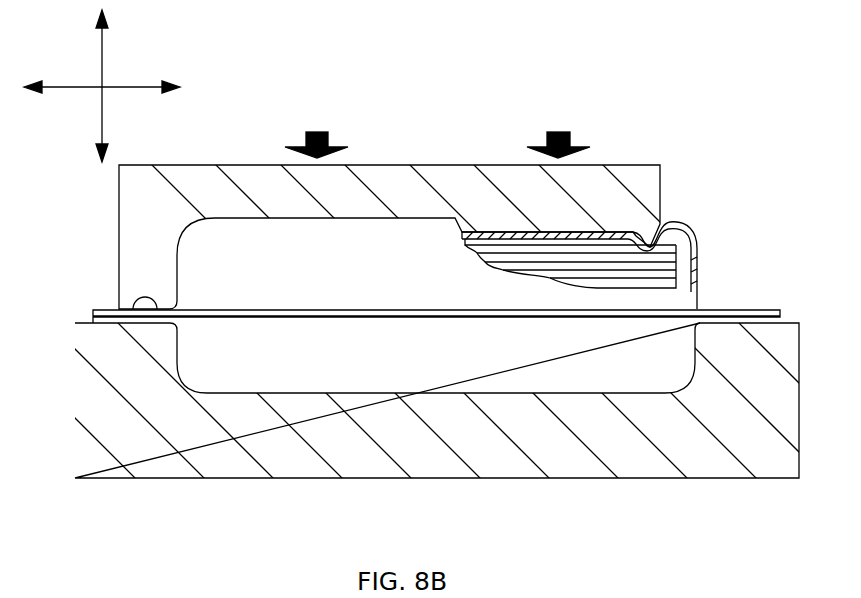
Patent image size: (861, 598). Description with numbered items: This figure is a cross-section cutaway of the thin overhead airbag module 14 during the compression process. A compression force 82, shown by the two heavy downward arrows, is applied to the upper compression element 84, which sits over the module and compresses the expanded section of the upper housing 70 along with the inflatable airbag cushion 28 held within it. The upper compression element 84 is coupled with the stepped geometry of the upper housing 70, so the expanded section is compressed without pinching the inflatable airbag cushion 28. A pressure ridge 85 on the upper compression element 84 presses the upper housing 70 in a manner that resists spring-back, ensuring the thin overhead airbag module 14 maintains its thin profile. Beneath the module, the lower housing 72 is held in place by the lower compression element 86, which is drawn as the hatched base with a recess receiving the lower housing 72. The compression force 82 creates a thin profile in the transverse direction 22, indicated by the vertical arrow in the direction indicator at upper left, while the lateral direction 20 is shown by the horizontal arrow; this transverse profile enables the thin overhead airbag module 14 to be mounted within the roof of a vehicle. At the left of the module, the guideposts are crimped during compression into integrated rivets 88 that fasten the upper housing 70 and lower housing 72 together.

The thin overhead airbag module 14 is at (714, 303).
The lateral direction 20 is at (131, 88).
The transverse direction 22 is at (103, 47).
The inflatable airbag cushion 28 is at (668, 274).
The upper housing 70 is at (686, 226).
The lower housing 72 is at (630, 373).
The compression force 82 is at (547, 138).
The upper compression element 84 is at (662, 176).
The pressure ridge 85 is at (662, 224).
The lower compression element 86 is at (578, 462).
The integrated rivets 88 is at (145, 298).